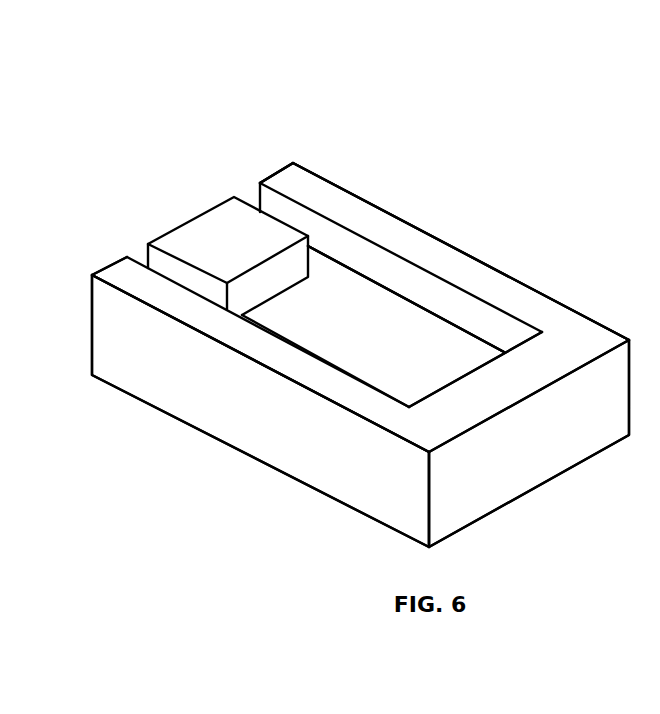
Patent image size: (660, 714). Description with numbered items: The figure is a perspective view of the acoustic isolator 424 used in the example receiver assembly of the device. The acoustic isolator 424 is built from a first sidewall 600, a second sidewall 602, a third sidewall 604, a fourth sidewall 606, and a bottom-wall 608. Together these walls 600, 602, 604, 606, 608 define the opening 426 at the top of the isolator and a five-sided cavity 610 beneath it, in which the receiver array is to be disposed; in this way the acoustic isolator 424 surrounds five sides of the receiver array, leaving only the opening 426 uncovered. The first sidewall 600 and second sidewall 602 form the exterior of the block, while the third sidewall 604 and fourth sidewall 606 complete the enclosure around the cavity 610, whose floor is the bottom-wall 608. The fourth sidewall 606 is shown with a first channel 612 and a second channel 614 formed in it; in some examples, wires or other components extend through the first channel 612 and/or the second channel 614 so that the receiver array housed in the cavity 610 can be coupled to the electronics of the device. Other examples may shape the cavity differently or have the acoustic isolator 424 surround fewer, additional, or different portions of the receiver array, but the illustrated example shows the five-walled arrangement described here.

The first sidewall 600 is at (473, 278).
The second sidewall 602 is at (505, 447).
The third sidewall 604 is at (262, 410).
The fourth sidewall 606 is at (227, 245).
The bottom-wall 608 is at (374, 352).
The five-sided cavity 610 is at (326, 298).
The first channel 612 is at (137, 253).
The second channel 614 is at (253, 197).
The acoustic isolator 424 is at (283, 143).
The opening 426 is at (342, 313).